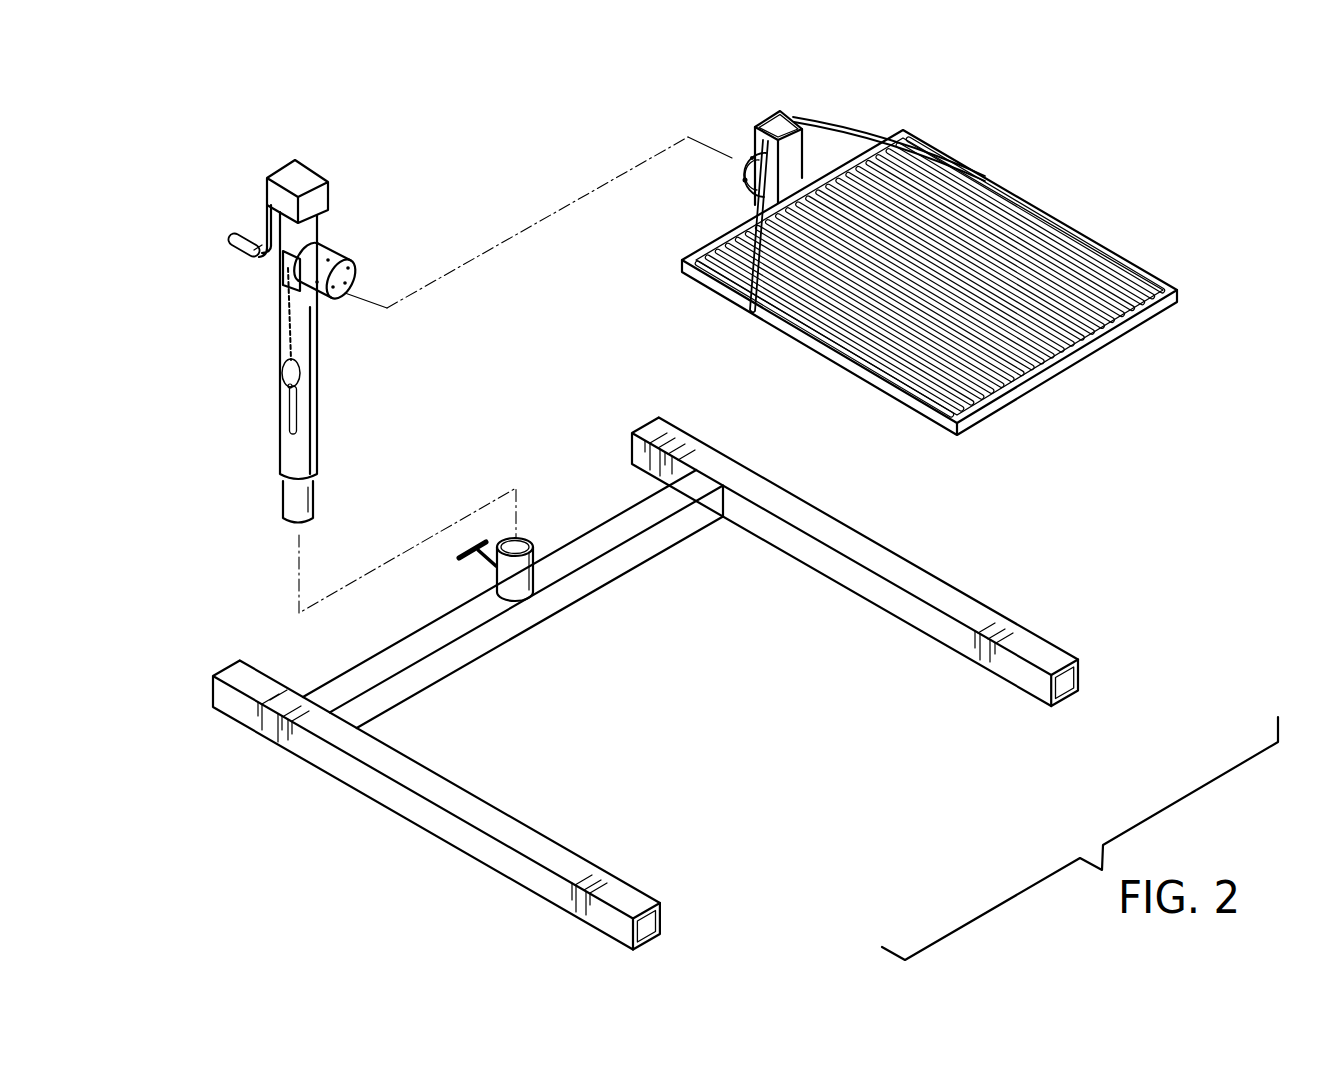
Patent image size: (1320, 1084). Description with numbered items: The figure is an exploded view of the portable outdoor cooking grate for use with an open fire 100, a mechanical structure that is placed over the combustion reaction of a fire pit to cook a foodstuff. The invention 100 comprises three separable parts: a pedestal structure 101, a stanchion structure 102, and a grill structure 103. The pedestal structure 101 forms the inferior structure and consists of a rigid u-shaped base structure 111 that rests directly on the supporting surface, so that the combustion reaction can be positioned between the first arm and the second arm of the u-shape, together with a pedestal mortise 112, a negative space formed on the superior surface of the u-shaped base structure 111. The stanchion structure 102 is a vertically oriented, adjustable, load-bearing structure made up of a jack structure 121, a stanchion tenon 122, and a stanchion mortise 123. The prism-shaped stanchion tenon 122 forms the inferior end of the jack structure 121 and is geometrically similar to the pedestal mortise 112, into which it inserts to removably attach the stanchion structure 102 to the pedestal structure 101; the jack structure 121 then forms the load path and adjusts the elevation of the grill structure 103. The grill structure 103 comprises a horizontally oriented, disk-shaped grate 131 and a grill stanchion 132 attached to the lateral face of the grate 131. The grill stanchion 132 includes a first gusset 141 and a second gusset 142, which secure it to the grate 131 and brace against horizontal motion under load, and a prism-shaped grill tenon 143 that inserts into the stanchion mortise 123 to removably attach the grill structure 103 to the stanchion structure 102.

The portable outdoor cooking grate for use with an open fire 100 is at (1212, 145).
The pedestal structure 101 is at (805, 667).
The stanchion structure 102 is at (208, 221).
The grill structure 103 is at (1226, 412).
The u-shaped base structure 111 is at (790, 553).
The pedestal mortise 112 is at (523, 576).
The jack structure 121 is at (280, 337).
The stanchion tenon 122 is at (314, 488).
The stanchion mortise 123 is at (338, 260).
The grate 131 is at (1068, 290).
The grill stanchion 132 is at (973, 88).
The first gusset 141 is at (867, 199).
The second gusset 142 is at (807, 139).
The grill tenon 143 is at (723, 137).